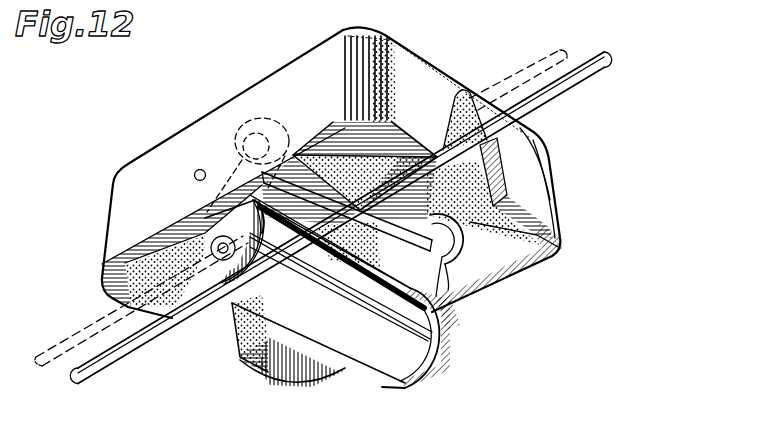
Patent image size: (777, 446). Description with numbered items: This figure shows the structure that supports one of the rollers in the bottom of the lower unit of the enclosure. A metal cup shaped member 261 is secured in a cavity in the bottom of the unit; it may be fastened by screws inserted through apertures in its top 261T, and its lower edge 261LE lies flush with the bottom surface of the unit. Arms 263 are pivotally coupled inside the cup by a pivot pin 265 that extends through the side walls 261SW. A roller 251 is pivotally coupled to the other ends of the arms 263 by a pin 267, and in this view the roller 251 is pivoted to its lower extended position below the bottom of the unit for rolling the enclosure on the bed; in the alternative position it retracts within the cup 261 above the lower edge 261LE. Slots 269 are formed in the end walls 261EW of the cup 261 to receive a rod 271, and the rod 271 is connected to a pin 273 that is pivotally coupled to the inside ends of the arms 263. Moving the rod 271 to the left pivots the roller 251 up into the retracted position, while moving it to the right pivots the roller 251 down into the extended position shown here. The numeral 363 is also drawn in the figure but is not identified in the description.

The roller 251 is at (372, 333).
The cup shaped member 261 is at (122, 247).
The top 261T is at (332, 143).
The end walls 261EW is at (427, 82).
The side walls 261SW is at (148, 176).
The lower edge 261LE is at (265, 338).
The arms 263 is at (480, 250).
The pivot pin 265 is at (197, 170).
The pin 267 is at (112, 290).
The slots 269 is at (510, 180).
The rod 271 is at (531, 103).
The pin 273 is at (560, 243).
The pivot boss 363 is at (128, 226).